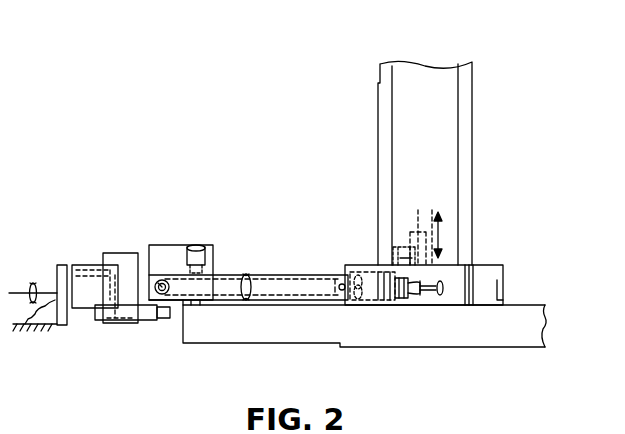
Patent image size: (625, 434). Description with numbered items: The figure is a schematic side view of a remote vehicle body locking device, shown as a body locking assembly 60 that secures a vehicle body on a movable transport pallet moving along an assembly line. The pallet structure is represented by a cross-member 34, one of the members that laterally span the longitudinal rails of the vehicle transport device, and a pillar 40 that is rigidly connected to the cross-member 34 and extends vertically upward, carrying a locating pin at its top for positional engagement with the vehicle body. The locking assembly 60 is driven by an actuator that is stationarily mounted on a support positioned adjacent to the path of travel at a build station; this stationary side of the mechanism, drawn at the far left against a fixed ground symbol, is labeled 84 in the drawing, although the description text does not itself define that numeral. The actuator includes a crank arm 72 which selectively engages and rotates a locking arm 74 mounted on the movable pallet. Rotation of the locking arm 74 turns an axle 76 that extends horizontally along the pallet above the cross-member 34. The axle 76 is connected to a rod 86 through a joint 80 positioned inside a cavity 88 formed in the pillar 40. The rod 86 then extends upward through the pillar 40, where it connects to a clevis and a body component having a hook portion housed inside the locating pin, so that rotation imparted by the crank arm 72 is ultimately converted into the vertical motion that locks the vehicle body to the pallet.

The cross-member 34 is at (363, 350).
The pillar 40 is at (465, 148).
The body locking assembly 60 is at (252, 188).
The crank arm 72 is at (147, 318).
The locking arm 74 is at (161, 283).
The axle 76 is at (272, 282).
The joint 80 is at (427, 308).
The fixed support 84 is at (34, 325).
The rod 86 is at (413, 227).
The cavity 88 is at (448, 192).